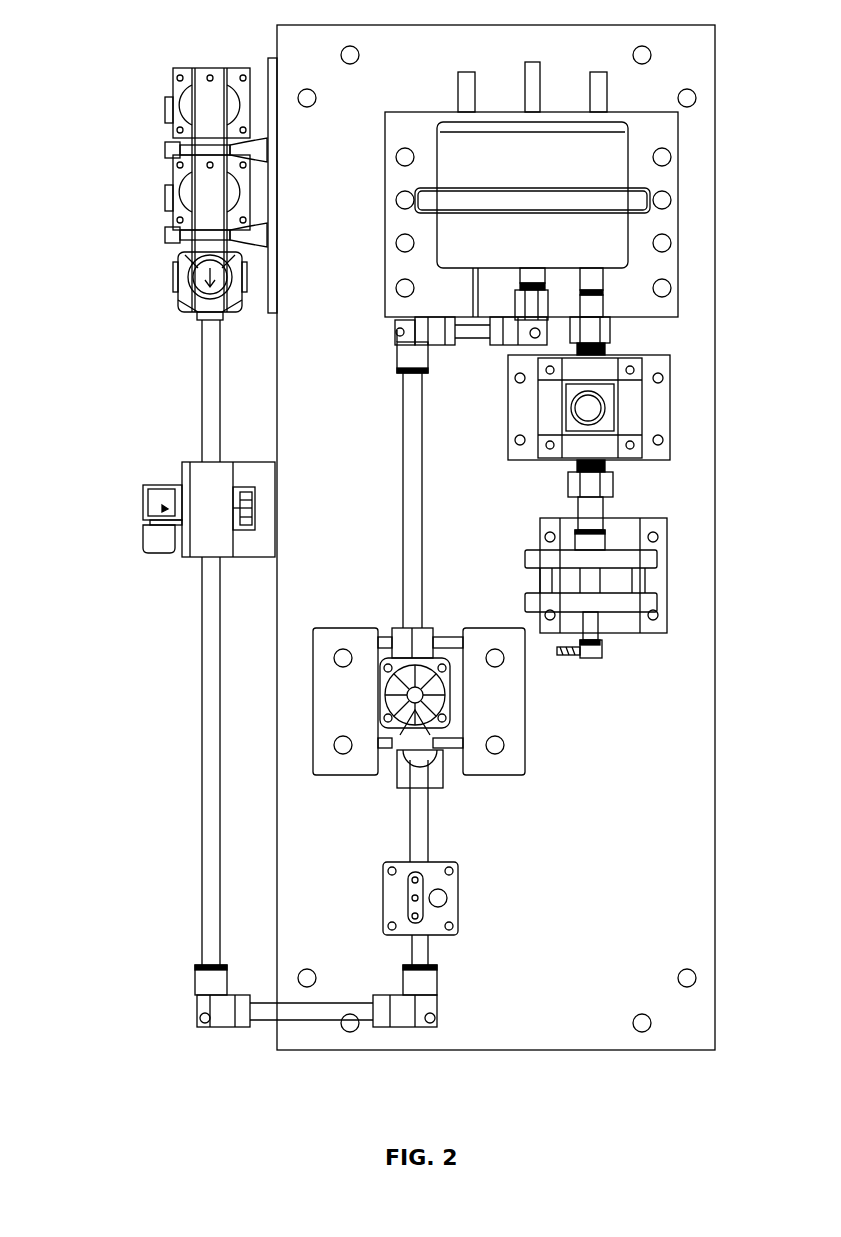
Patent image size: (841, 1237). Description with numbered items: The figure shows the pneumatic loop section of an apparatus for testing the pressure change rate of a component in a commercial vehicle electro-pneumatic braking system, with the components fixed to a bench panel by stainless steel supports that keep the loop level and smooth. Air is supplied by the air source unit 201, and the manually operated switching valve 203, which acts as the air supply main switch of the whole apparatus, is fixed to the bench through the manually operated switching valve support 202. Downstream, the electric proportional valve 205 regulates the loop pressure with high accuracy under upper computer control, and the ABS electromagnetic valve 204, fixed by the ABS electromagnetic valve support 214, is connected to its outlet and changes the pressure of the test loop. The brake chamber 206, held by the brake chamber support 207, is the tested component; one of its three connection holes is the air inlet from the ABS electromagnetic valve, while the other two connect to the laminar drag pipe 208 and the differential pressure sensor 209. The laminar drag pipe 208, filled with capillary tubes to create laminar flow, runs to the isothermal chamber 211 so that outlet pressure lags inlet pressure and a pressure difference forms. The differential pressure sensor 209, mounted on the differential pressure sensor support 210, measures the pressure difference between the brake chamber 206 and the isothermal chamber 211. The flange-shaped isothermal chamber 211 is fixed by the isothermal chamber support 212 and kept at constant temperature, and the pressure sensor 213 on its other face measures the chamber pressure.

The air source unit 201 is at (187, 198).
The manually operated switching valve support 202 is at (262, 468).
The manually operated switching valve 203 is at (155, 505).
The ABS electromagnetic valve 204 is at (380, 718).
The electric proportional valve 205 is at (392, 895).
The brake chamber 206 is at (580, 152).
The brake chamber support 207 is at (642, 173).
The laminar drag pipe 208 is at (612, 343).
The differential pressure sensor 209 is at (592, 404).
The differential pressure sensor support 210 is at (670, 453).
The isothermal chamber 211 is at (612, 562).
The isothermal chamber support 212 is at (662, 633).
The pressure sensor 213 is at (587, 657).
The ABS electromagnetic valve support 214 is at (512, 710).